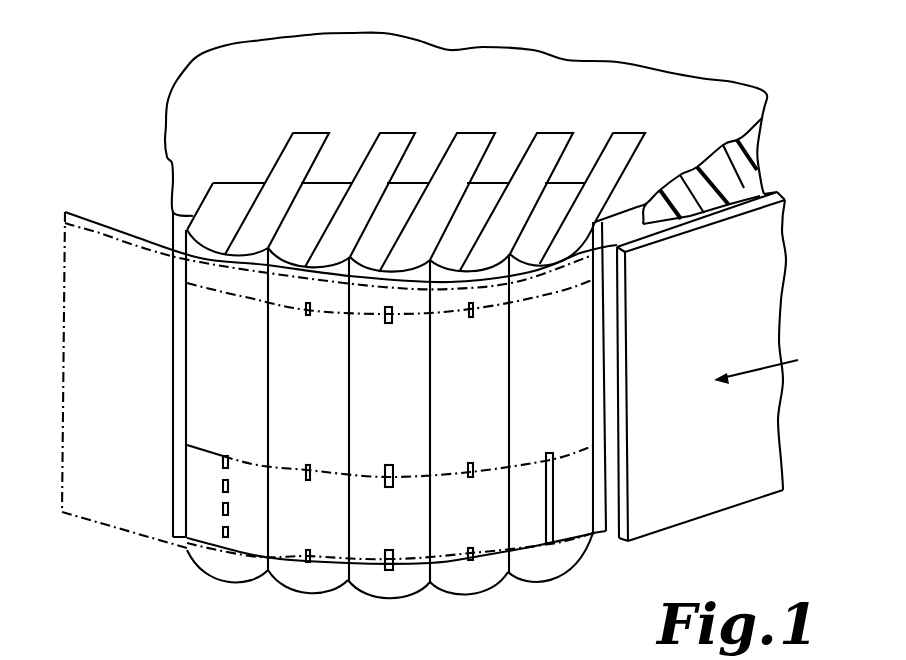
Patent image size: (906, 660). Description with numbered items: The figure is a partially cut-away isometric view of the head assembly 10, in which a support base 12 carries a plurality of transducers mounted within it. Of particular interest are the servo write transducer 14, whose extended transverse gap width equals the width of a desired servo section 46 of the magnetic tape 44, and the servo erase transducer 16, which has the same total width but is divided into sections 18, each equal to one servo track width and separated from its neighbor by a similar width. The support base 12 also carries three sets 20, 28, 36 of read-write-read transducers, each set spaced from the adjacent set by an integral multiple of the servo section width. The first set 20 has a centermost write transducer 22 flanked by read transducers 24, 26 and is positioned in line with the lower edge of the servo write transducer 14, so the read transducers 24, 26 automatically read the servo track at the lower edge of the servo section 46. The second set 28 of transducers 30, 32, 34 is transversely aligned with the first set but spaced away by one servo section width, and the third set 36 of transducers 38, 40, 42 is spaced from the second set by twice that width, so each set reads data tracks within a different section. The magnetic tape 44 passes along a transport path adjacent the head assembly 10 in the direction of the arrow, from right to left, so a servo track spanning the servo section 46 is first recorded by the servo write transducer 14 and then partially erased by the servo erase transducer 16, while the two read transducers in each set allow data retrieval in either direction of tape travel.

The head assembly 10 is at (697, 65).
The support base 12 is at (528, 60).
The servo write transducer 14 is at (550, 527).
The servo erase transducer 16 is at (204, 535).
The sections 18 is at (223, 510).
The first set of read-write-read transducers 20 is at (506, 577).
The write transducer 22 is at (386, 570).
The read transducer 24 is at (306, 562).
The read transducer 26 is at (468, 560).
The second set of read/write transducers 28 is at (507, 446).
The read transducer 30 is at (306, 466).
The write transducer 32 is at (386, 466).
The read transducer 34 is at (469, 463).
The third set of read/write transducers 36 is at (496, 318).
The read transducer 38 is at (307, 315).
The write transducer 40 is at (386, 323).
The read transducer 42 is at (470, 318).
The magnetic tape 44 is at (765, 293).
The servo section 46 is at (136, 437).